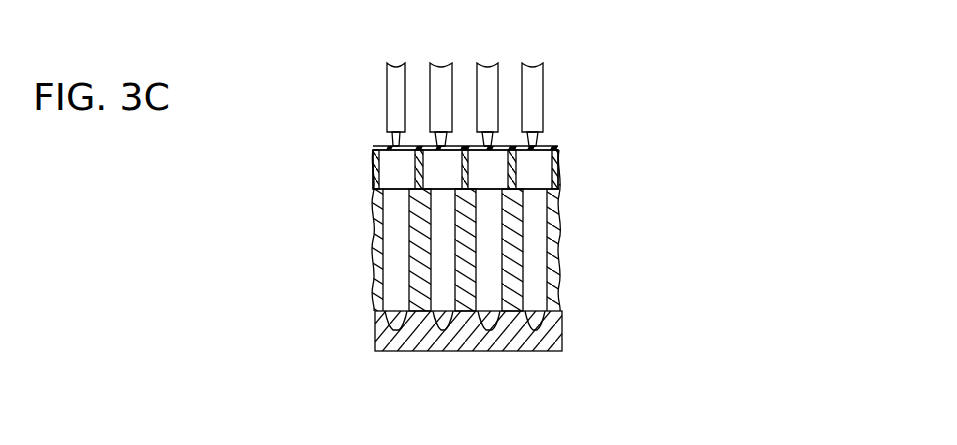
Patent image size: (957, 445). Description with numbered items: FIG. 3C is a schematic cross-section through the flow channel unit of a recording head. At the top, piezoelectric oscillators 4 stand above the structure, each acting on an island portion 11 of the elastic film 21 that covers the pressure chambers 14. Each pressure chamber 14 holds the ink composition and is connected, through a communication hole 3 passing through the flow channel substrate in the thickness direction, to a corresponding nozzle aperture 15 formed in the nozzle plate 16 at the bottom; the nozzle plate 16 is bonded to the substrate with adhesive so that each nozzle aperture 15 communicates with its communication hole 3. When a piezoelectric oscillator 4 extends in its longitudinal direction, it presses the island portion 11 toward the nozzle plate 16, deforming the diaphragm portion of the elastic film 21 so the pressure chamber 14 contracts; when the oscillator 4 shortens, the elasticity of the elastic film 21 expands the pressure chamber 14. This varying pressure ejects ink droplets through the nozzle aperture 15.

The communication hole 3 is at (530, 217).
The piezoelectric oscillator 4 is at (533, 75).
The island portion 11 is at (440, 141).
The pressure chamber 14 is at (487, 172).
The nozzle aperture 15 is at (387, 330).
The nozzle plate 16 is at (512, 338).
The elastic film 21 is at (383, 147).